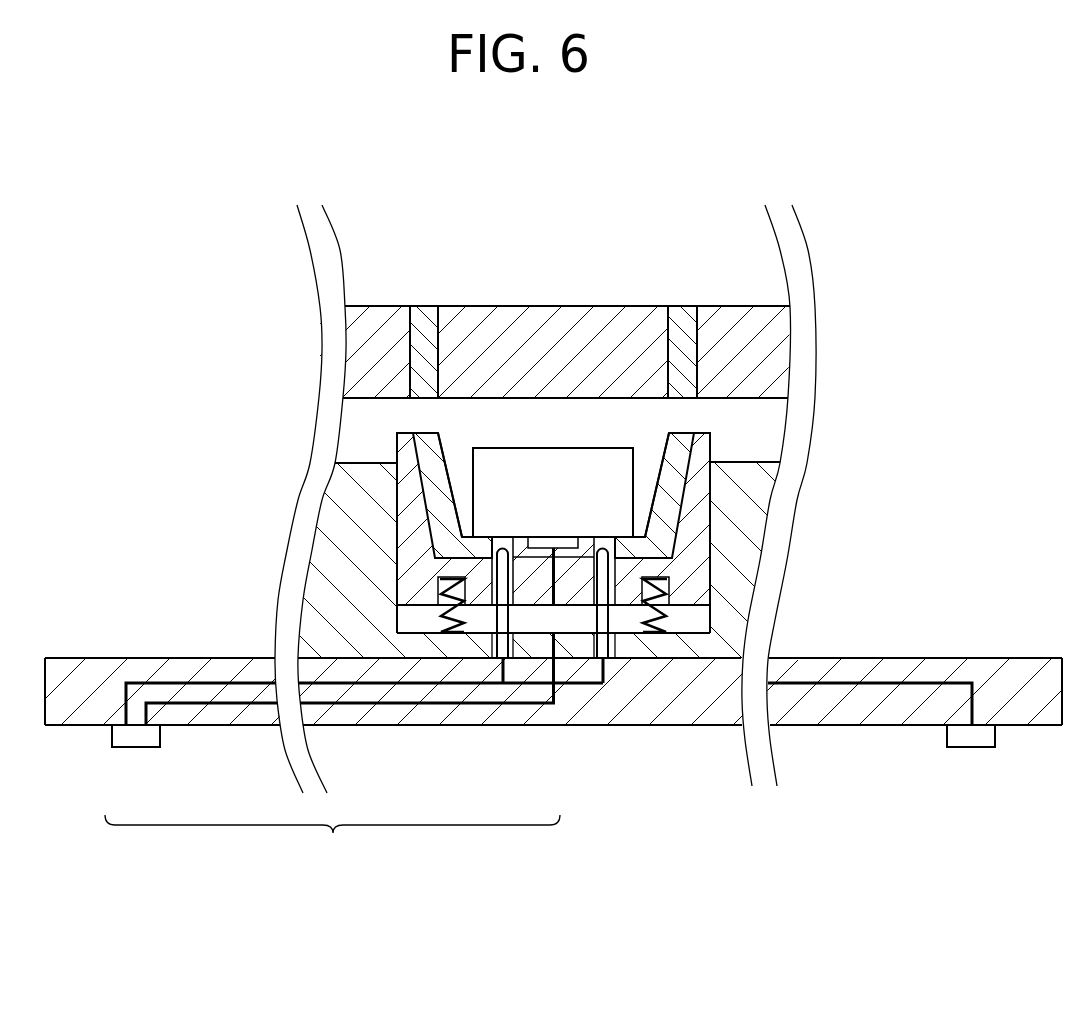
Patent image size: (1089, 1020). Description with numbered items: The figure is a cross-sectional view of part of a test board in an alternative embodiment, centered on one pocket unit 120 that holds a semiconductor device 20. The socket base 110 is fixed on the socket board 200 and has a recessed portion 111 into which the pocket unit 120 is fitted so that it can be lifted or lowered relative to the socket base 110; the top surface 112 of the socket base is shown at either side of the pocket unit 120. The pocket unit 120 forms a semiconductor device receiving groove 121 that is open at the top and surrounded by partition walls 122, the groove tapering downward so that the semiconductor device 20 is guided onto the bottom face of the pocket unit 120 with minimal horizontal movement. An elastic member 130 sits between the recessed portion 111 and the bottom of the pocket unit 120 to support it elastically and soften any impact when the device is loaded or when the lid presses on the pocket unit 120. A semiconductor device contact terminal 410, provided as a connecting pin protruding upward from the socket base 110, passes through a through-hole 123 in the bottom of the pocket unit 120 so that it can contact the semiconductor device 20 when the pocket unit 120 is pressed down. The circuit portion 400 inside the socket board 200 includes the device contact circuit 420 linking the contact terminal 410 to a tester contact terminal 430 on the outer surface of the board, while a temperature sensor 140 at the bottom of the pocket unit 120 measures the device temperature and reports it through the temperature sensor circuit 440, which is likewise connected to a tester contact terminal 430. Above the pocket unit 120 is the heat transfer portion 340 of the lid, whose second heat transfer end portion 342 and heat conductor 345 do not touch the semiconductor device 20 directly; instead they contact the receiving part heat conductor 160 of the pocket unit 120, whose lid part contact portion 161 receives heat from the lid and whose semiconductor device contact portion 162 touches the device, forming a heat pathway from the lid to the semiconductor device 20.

The semiconductor device 20 is at (620, 492).
The socket base 110 is at (753, 497).
The recessed portion 111 is at (712, 623).
The upper surface of housing 112 is at (760, 462).
The pocket unit 120 is at (417, 510).
The semiconductor device receiving groove 121 is at (457, 477).
The partition wall 122 is at (403, 433).
The through-hole 123 is at (465, 566).
The elastic member 130 is at (660, 636).
The temperature sensor 140 is at (568, 540).
The receiving part heat conductor 160 is at (717, 452).
The lid part contact portion 161 is at (694, 432).
The semiconductor device contact portion 162 is at (712, 577).
The socket board 200 is at (1040, 658).
The heat transfer portion 340 is at (421, 306).
The second heat transfer end portion 342 is at (410, 405).
The heat conductor 345 is at (440, 340).
The circuit portion 400 is at (332, 842).
The semiconductor device contact terminal 410 is at (510, 643).
The device contact circuit 420 is at (333, 688).
The tester contact terminal 430 is at (138, 742).
The temperature sensor circuit 440 is at (451, 706).